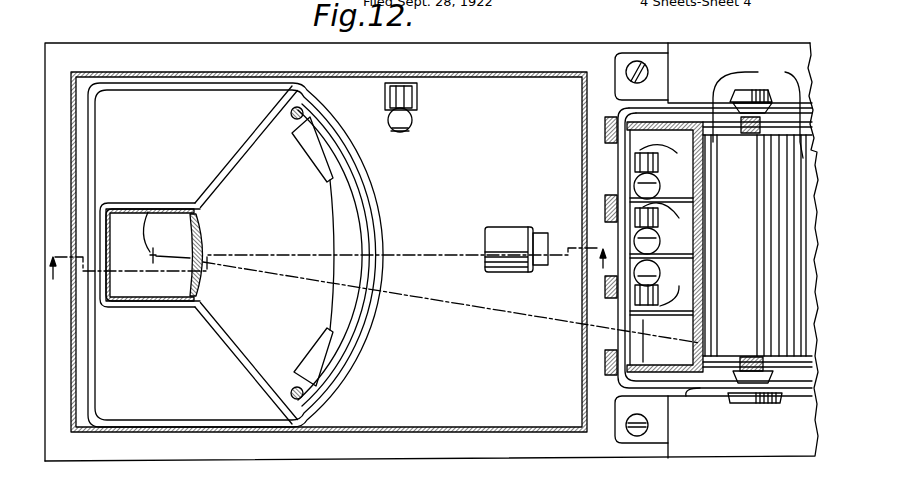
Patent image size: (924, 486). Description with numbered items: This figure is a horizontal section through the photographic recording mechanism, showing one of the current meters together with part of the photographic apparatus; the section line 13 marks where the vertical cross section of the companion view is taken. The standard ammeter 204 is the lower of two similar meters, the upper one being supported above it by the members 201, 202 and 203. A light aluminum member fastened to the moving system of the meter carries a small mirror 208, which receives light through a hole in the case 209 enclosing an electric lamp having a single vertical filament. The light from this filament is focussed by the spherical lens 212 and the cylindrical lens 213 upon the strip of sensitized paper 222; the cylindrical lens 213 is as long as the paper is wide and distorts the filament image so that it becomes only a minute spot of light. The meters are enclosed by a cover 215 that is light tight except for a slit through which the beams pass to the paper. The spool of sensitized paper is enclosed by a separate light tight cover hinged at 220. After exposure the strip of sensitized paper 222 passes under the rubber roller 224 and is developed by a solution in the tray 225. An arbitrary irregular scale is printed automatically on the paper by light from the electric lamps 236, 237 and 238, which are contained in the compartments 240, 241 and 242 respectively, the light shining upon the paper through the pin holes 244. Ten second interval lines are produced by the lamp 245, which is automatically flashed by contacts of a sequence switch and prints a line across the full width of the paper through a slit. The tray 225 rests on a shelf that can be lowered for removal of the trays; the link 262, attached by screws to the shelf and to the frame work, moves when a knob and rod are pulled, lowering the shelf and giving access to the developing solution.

The section line 13— 13 is at (373, 295).
The supporting member 201 is at (199, 209).
The supporting member 202 is at (297, 386).
The supporting member 203 is at (291, 118).
The standard ammeter 204 is at (237, 335).
The small mirror 208 is at (148, 212).
The lamp case 209 is at (515, 271).
The spherical lens 212 is at (205, 241).
The cylindrical lens 213 is at (633, 346).
The cover 215 is at (487, 73).
The hinge 220 is at (605, 129).
The strip of sensitized paper 222 is at (751, 73).
The roller 224 is at (728, 352).
The tray 225 is at (786, 366).
The electric lamp 236 is at (634, 183).
The electric lamp 237 is at (633, 236).
The electric lamp 238 is at (634, 268).
The compartment 240 is at (633, 153).
The compartment 241 is at (633, 208).
The compartment 242 is at (633, 290).
The pin holes 244 is at (705, 221).
The electric lamp 245 is at (410, 127).
The link 262 is at (687, 398).